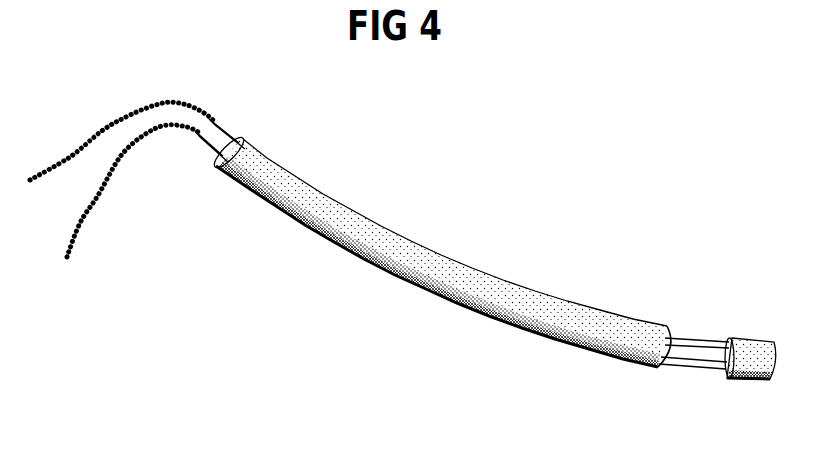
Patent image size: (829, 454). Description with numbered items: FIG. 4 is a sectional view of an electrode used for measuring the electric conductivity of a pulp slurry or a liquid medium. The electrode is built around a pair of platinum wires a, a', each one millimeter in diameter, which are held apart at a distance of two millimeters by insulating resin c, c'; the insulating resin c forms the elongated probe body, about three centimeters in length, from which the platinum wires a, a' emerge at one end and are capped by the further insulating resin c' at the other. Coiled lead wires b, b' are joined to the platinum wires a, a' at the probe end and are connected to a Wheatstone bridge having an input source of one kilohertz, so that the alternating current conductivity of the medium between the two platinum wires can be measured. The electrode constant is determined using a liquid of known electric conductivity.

The platinum wire a is at (469, 223).
The platinum wire a' is at (454, 267).
The lead wire b is at (121, 141).
The lead wire b' is at (133, 191).
The insulating resin c is at (440, 250).
The insulating resin c' is at (750, 344).